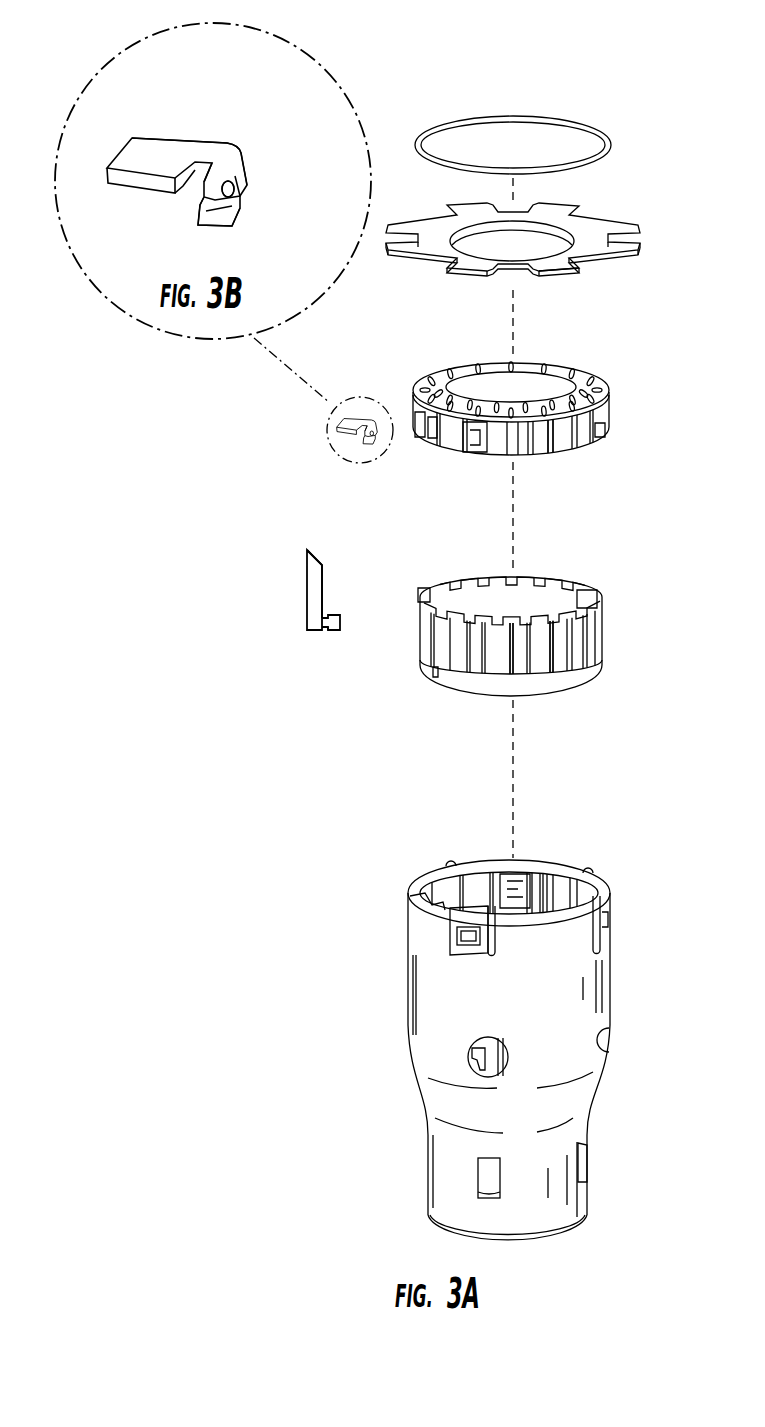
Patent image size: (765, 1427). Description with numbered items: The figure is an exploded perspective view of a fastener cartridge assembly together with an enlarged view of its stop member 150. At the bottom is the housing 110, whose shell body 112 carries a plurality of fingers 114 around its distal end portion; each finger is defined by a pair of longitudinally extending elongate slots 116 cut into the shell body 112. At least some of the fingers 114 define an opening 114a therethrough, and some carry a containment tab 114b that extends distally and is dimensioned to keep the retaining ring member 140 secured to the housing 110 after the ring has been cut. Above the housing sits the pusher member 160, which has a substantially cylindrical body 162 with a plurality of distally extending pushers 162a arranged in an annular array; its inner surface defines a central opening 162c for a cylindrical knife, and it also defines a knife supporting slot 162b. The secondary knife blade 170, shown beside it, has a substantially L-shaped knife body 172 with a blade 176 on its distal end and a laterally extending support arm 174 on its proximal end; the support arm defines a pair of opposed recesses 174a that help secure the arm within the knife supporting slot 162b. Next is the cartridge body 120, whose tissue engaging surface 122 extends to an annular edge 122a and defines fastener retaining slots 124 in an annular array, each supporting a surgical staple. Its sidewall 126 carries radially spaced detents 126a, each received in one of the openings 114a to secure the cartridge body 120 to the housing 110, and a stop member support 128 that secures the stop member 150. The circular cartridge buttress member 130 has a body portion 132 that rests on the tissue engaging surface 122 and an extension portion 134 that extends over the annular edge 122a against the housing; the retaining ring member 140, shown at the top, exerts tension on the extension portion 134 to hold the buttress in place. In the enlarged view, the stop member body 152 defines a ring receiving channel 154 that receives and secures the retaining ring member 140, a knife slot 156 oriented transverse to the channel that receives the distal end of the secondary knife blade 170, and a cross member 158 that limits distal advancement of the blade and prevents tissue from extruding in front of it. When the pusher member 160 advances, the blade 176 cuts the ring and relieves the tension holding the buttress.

In FIG. 3A, the housing 110 is at (513, 1044).
In FIG. 3A, the shell body 112 is at (609, 945).
In FIG. 3A, the fingers 114 is at (409, 935).
In FIG. 3A, the opening 114a is at (460, 938).
In FIG. 3A, the containment tab 114b is at (412, 898).
In FIG. 3A, the elongate slots 116 is at (495, 960).
In FIG. 3A, the fastener cartridge body 120 is at (533, 415).
In FIG. 3A, the tissue engaging surface 122 is at (544, 370).
In FIG. 3A, the annular edge 122a is at (565, 368).
In FIG. 3A, the fastener retaining slots 124 is at (570, 446).
In FIG. 3A, the sidewall 126 is at (545, 450).
In FIG. 3A, the detents 126a is at (606, 430).
In FIG. 3A, the stop member support 128 is at (421, 440).
In FIG. 3A, the circular cartridge buttress member 130 is at (548, 254).
In FIG. 3A, the body portion 132 is at (590, 232).
In FIG. 3A, the extension portion 134 is at (563, 276).
In FIG. 3A, the retaining ring member 140 is at (612, 142).
In FIG. 3B, the stop member 150 is at (172, 155).
In FIG. 3A, the stop member 150 is at (352, 416).
In FIG. 3B, the stop member body 152 is at (138, 150).
In FIG. 3B, the ring receiving channel 154 is at (234, 202).
In FIG. 3B, the knife slot 156 is at (178, 213).
In FIG. 3B, the cross member 158 is at (222, 155).
In FIG. 3A, the pusher member 160 is at (505, 636).
In FIG. 3A, the cylindrical body 162 is at (560, 652).
In FIG. 3A, the pushers 162a is at (500, 670).
In FIG. 3A, the knife supporting slot 162b is at (432, 688).
In FIG. 3A, the central opening 162c is at (541, 592).
In FIG. 3A, the secondary knife blade 170 is at (284, 594).
In FIG. 3A, the knife body 172 is at (302, 632).
In FIG. 3A, the support arm 174 is at (320, 616).
In FIG. 3A, the opposed recesses 174a is at (330, 634).
In FIG. 3A, the blade 176 is at (310, 553).